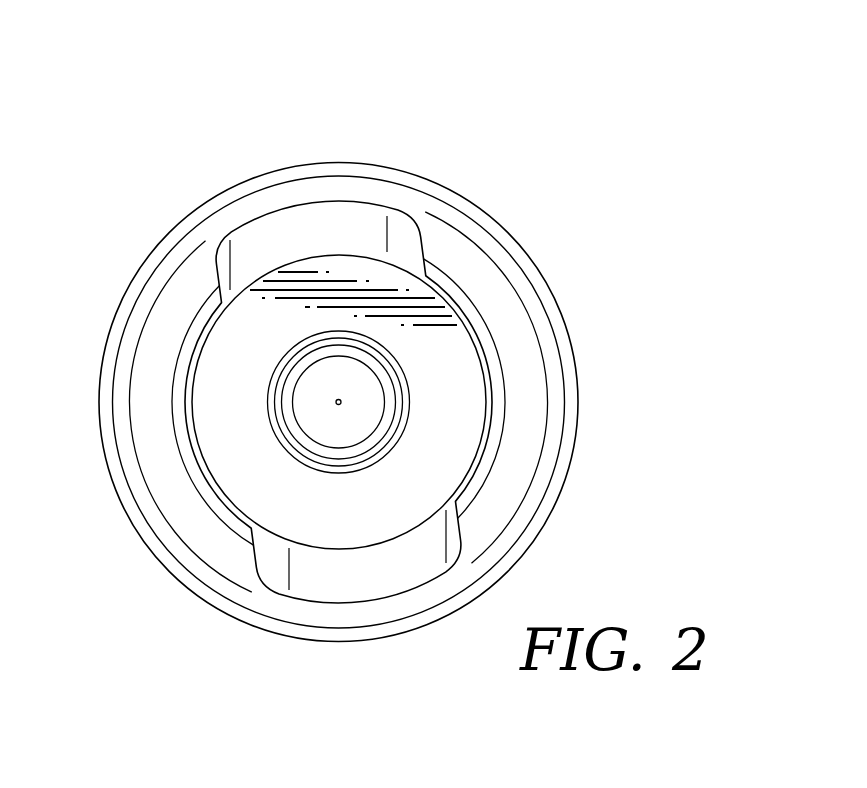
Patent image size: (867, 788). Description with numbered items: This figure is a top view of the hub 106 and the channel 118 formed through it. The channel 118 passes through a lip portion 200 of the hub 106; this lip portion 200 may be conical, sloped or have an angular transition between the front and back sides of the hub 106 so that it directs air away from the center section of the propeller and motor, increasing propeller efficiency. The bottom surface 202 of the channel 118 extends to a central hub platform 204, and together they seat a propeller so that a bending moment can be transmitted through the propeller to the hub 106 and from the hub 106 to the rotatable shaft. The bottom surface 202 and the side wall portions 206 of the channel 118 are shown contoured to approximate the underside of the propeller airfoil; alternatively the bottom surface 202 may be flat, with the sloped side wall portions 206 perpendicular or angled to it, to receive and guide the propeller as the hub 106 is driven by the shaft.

The hub 106 is at (153, 196).
The channel 118 is at (337, 206).
The lip portion 200 is at (484, 238).
The bottom surface 202 is at (272, 240).
The hub platform 204 is at (222, 372).
The side wall portions 206 is at (396, 234).